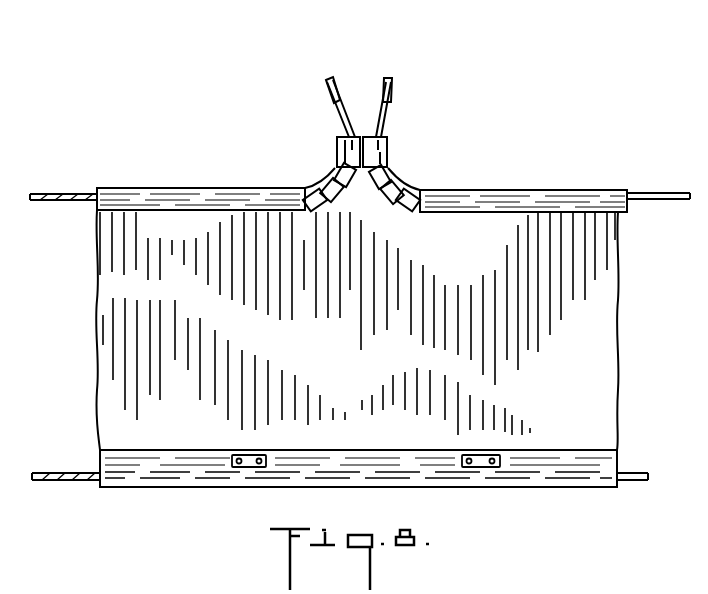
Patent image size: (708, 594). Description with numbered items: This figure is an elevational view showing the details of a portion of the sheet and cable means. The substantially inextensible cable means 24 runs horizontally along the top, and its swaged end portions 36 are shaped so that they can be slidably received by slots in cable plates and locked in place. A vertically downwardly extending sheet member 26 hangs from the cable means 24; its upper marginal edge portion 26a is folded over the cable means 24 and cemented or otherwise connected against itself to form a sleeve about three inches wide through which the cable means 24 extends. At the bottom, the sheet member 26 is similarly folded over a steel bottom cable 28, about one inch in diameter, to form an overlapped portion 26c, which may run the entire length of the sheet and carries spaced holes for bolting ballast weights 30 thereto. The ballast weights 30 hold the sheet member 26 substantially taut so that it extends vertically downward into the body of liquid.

The cable means 24 is at (676, 198).
The sheet member 26 is at (605, 310).
The upper marginal edge portion 26a is at (505, 200).
The overlapped portion 26c is at (595, 456).
The bottom cable 28 is at (630, 482).
The ballast weights 30 is at (245, 468).
The end portions 36 is at (330, 76).